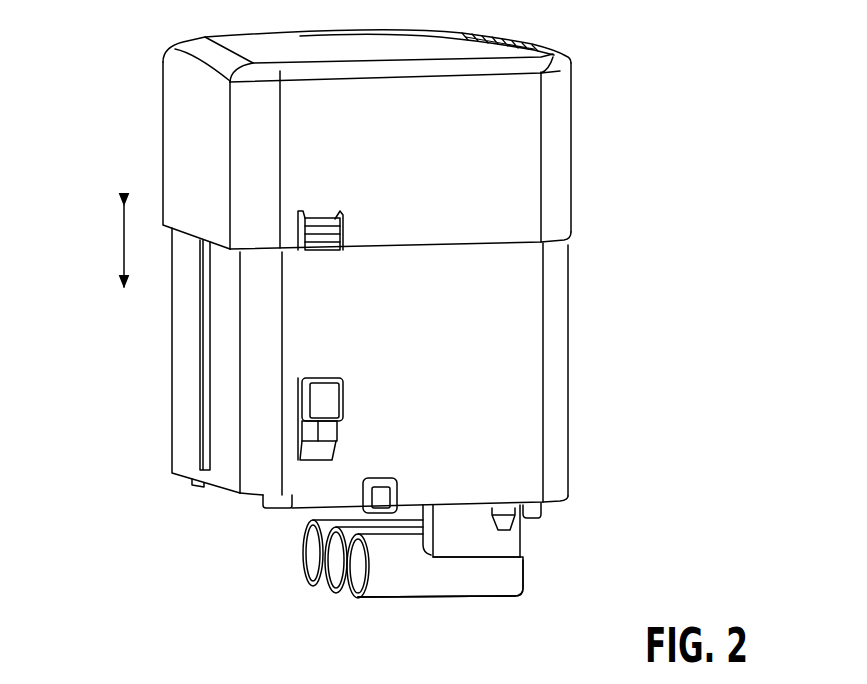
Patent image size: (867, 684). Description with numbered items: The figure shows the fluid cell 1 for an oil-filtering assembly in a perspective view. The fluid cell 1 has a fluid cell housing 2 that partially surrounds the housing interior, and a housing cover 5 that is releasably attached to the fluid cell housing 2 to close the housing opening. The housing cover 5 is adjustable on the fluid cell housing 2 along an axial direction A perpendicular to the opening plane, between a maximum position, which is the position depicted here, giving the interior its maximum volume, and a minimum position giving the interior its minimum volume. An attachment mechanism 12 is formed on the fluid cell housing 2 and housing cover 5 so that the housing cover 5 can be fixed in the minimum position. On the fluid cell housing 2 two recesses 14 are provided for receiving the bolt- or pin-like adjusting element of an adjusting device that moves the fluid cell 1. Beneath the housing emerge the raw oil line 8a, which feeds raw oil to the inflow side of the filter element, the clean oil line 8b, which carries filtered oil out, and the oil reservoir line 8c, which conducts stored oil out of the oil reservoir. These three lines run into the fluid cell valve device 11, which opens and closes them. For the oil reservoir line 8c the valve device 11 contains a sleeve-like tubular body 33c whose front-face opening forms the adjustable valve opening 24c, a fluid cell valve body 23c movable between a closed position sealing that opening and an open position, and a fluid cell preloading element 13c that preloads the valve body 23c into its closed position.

The fluid cell 1 is at (708, 138).
The housing cover 5 is at (578, 126).
The fluid cell housing 2 is at (576, 327).
The attachment mechanism 12 is at (341, 232).
The recess 14 is at (384, 493).
The raw oil line 8a is at (305, 539).
The clean oil line 8b is at (323, 561).
The oil reservoir line 8c is at (352, 596).
The fluid cell valve device 11 is at (507, 566).
The fluid cell valve body 23c is at (427, 574).
The valve opening 24c is at (436, 596).
The tubular body 33c is at (447, 572).
The fluid cell preloading element 13c is at (500, 577).
The axial direction A is at (121, 246).